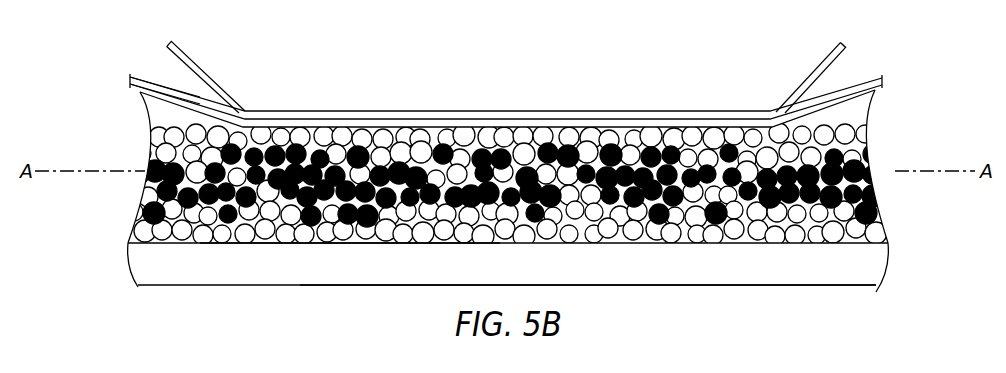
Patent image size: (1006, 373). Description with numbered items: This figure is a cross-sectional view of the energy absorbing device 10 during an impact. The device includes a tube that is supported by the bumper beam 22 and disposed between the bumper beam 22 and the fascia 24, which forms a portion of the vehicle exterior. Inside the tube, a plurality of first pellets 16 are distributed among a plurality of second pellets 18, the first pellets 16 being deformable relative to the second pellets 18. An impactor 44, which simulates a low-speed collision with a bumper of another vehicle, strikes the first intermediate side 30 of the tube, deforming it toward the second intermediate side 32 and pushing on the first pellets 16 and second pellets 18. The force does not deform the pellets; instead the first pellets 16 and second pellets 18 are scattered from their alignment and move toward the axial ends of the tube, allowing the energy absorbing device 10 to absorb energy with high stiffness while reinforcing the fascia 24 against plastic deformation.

The energy absorbing device 10 is at (44, 51).
The first pellets 16 is at (148, 170).
The second pellets 18 is at (152, 235).
The bumper beam 22 is at (783, 287).
The fascia 24 is at (866, 75).
The first intermediate side 30 is at (155, 88).
The second intermediate side 32 is at (293, 245).
The impactor 44 is at (795, 80).